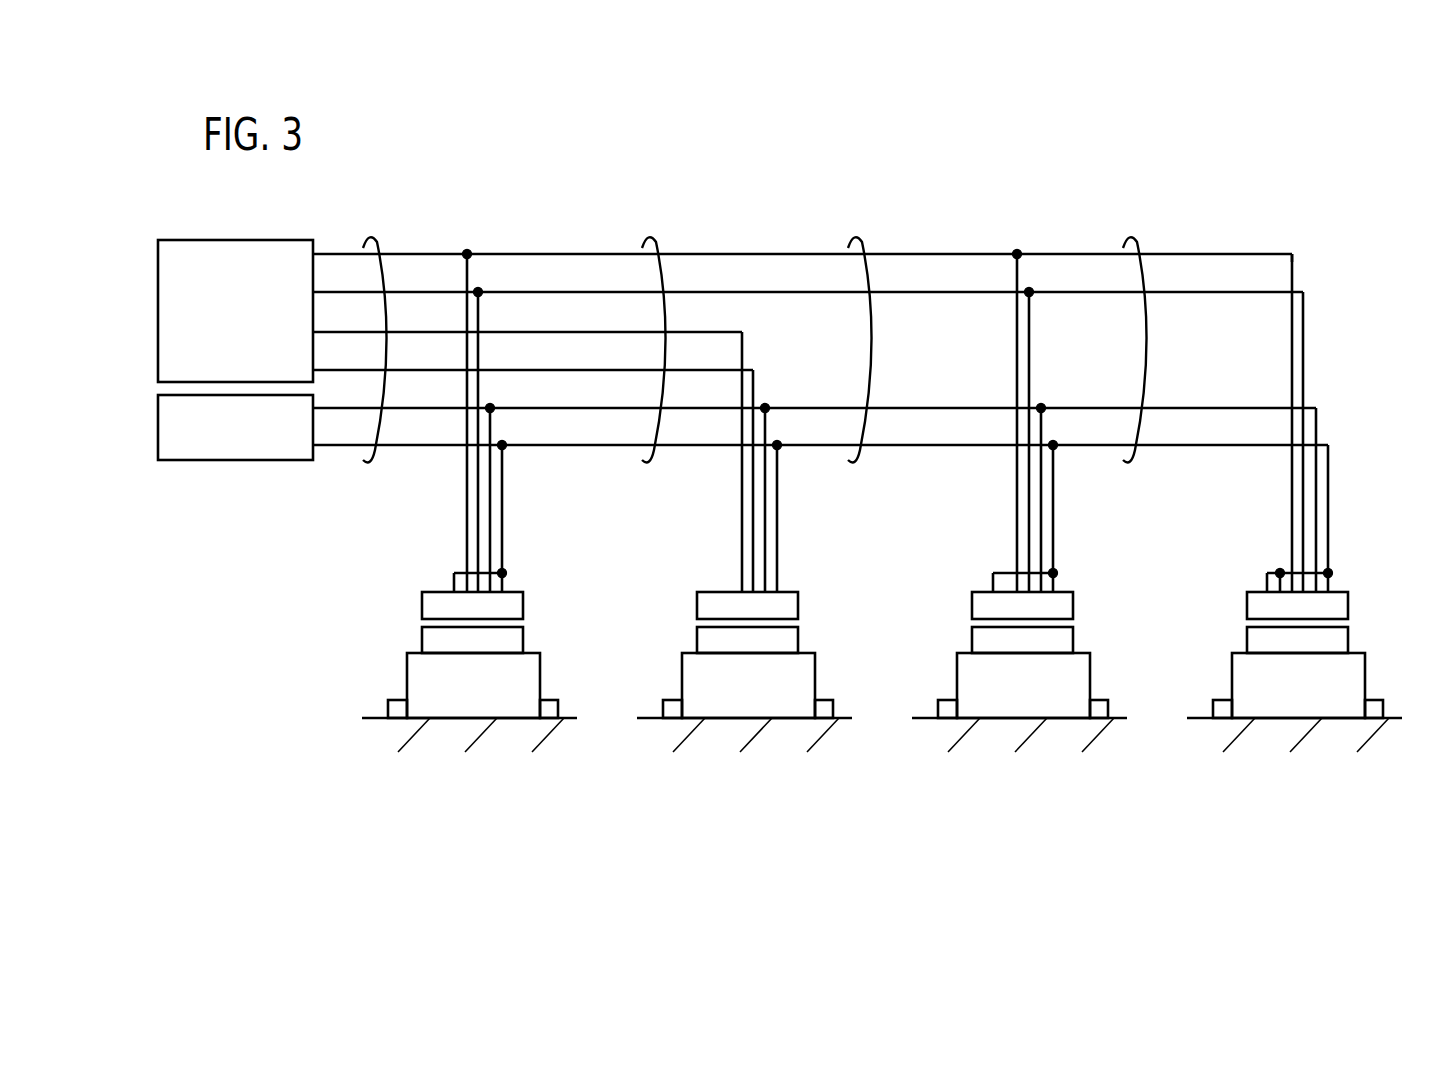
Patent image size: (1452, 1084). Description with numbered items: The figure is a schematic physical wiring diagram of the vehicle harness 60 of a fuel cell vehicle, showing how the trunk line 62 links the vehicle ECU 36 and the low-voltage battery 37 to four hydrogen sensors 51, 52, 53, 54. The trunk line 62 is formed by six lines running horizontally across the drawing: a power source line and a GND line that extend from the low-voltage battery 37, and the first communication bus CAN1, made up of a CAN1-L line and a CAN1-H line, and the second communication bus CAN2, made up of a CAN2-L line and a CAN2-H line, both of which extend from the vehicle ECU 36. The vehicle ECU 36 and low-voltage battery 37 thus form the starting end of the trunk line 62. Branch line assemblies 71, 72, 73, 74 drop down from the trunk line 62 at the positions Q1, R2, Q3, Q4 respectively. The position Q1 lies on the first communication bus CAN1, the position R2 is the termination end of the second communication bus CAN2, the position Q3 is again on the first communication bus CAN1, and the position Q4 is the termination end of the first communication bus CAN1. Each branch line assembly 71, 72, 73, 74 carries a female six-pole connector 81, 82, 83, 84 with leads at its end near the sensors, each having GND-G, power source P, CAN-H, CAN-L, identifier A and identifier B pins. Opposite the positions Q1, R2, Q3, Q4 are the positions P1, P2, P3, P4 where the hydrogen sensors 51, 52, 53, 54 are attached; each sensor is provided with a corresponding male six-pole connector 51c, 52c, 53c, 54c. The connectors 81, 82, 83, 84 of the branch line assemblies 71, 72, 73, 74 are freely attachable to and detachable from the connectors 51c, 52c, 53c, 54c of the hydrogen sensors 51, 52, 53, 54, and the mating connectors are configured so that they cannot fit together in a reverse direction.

The vehicle ECU 36 is at (242, 239).
The low-voltage battery 37 is at (250, 461).
The vehicle harness 60 is at (399, 174).
The trunk line 62 is at (373, 243).
The position Q1 is at (475, 242).
The position Q3 is at (1025, 242).
The position Q4 is at (1301, 242).
The position R2 is at (758, 335).
The branch line assembly 71 is at (450, 525).
The branch line assembly 72 is at (725, 525).
The branch line assembly 73 is at (1000, 525).
The branch line assembly 74 is at (1275, 525).
The connector 81 is at (524, 608).
The connector 82 is at (799, 608).
The connector 83 is at (1074, 608).
The connector 84 is at (1349, 608).
The connector 51c is at (524, 640).
The connector 52c is at (799, 640).
The connector 53c is at (1074, 640).
The connector 54c is at (1349, 640).
The hydrogen sensor 51 is at (406, 678).
The hydrogen sensor 52 is at (681, 678).
The hydrogen sensor 53 is at (956, 678).
The hydrogen sensor 54 is at (1231, 678).
The position P1 is at (462, 671).
The position P2 is at (737, 671).
The position P3 is at (1012, 671).
The position P4 is at (1287, 671).